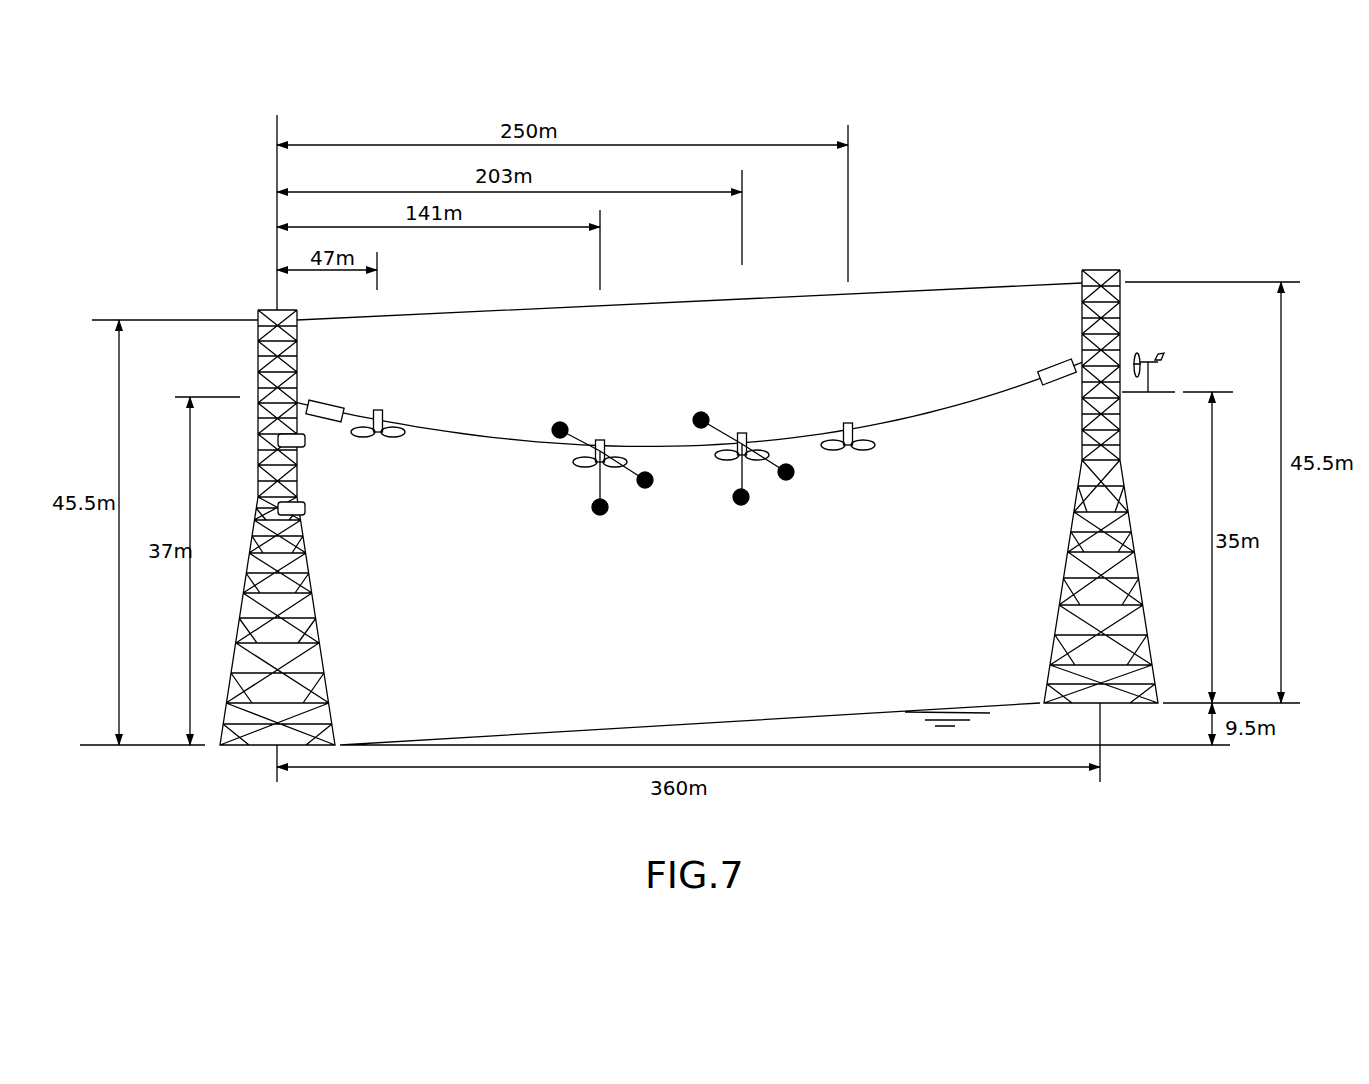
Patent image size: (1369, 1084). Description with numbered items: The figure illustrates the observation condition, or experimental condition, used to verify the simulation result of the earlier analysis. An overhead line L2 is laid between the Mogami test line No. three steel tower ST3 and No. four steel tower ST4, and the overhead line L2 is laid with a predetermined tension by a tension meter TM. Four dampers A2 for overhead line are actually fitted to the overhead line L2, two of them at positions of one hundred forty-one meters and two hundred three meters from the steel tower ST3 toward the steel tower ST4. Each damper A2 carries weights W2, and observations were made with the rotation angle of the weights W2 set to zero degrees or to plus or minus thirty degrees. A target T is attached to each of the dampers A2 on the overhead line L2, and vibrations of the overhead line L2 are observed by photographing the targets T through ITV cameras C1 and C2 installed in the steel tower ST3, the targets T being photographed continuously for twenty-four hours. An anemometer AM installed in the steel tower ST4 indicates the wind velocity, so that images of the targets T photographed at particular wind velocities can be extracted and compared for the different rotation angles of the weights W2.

The No. 3 steel tower ST3 is at (308, 600).
The No. 4 steel tower ST4 is at (1062, 565).
The overhead line L2 is at (988, 397).
The tension meter TM is at (330, 402).
The damper for overhead line A2 is at (382, 408).
The weight W2 is at (392, 437).
The target T is at (578, 432).
The ITV camera C1 is at (306, 445).
The ITV camera C2 is at (306, 507).
The anemometer AM is at (1150, 362).